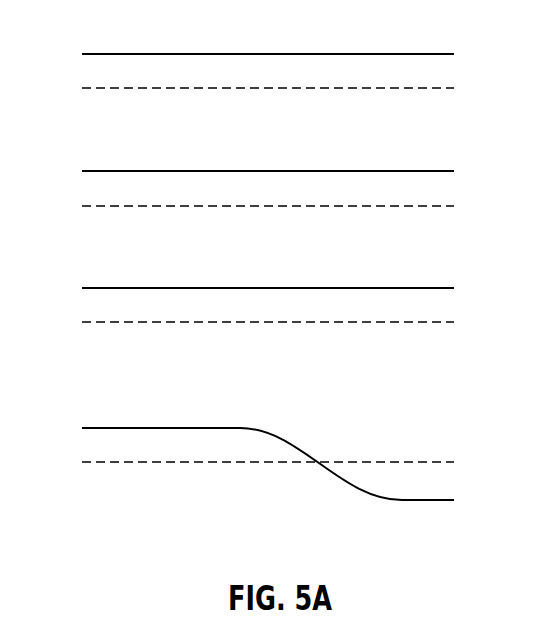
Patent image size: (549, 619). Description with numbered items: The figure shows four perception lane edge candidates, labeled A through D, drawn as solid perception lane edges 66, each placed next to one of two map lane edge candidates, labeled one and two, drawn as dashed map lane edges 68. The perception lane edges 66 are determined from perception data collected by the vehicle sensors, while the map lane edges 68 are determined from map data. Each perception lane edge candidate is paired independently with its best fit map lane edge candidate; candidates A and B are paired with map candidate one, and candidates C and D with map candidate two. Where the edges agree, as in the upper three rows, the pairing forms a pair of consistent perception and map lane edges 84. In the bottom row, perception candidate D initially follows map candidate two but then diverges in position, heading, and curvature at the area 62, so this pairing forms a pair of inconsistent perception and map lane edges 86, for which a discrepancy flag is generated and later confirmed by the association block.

The pair of consistent perception and map lane edges 84 is at (96, 42).
The pair of inconsistent perception and map lane edges 86 is at (96, 416).
The perception lane edge 66 is at (340, 54).
The map lane edge 68 is at (400, 89).
The area 62 is at (319, 474).